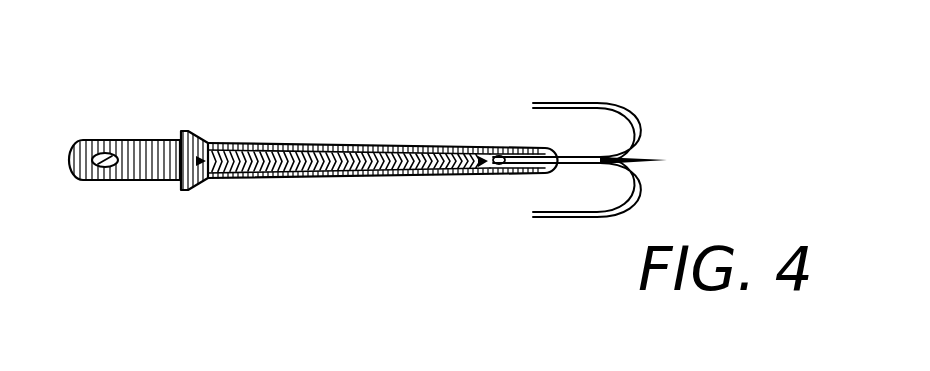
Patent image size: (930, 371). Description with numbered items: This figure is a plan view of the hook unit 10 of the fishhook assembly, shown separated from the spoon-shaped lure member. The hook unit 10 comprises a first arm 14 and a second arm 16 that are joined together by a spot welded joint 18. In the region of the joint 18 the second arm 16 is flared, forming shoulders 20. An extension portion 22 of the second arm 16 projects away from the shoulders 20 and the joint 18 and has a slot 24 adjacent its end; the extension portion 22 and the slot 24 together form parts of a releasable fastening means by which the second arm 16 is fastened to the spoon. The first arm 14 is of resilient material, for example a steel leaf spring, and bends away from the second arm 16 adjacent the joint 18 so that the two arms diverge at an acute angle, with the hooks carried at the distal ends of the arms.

The hook unit 10 is at (354, 166).
The first arm 14 is at (360, 148).
The second arm 16 is at (506, 178).
The spot welded joint 18 is at (224, 174).
The shoulders 20 is at (181, 132).
The extension portion 22 is at (111, 164).
The slot 24 is at (118, 140).